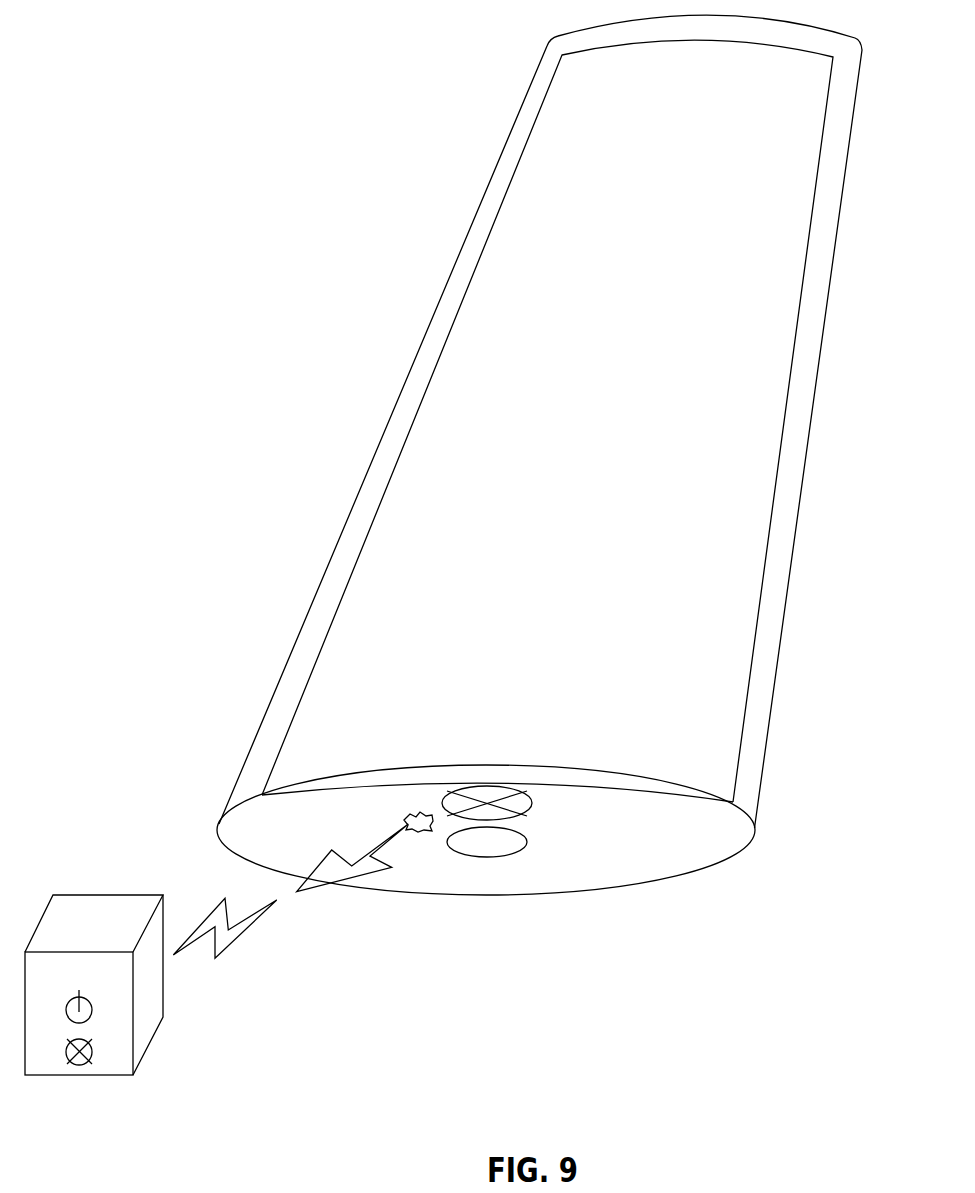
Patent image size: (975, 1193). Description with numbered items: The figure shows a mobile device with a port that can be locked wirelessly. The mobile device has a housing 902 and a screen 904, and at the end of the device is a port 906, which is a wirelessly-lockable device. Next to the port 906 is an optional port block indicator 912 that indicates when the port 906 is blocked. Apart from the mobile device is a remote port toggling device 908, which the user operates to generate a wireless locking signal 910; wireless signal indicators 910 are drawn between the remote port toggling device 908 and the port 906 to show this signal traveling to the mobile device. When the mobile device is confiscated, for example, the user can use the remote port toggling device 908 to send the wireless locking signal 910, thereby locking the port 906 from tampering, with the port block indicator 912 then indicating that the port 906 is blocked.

The housing 902 is at (793, 553).
The screen 904 is at (760, 605).
The port 906 is at (475, 857).
The remote port toggling device 908 is at (150, 1043).
The wireless signal 910 is at (235, 943).
The port block indicator 912 is at (530, 802).